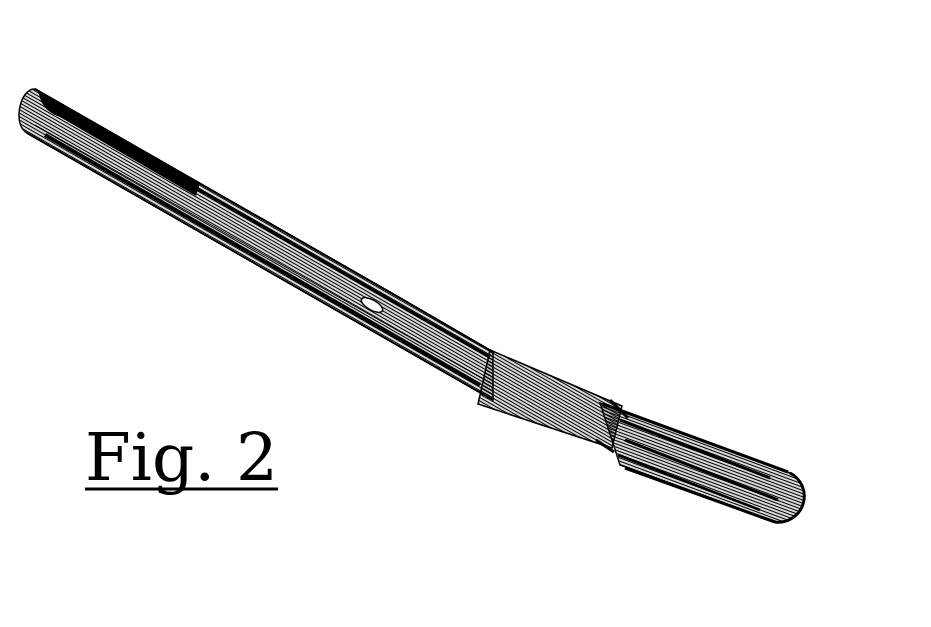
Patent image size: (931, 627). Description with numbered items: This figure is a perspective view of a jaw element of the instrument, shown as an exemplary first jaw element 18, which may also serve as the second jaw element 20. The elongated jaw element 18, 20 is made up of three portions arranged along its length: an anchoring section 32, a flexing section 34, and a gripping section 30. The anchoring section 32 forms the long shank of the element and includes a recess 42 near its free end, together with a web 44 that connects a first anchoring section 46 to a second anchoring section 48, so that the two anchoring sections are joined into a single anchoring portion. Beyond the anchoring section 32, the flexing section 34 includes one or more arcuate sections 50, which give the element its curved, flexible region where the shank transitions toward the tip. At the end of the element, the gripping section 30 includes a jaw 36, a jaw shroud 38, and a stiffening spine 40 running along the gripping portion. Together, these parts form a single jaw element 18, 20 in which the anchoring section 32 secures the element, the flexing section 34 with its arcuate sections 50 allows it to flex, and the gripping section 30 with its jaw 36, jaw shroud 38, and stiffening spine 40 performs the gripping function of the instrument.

The first jaw element 18 is at (537, 237).
The second jaw element 20 is at (256, 244).
The gripping section 30 is at (677, 512).
The anchoring section 32 is at (147, 127).
The flexing section 34 is at (587, 360).
The jaw 36 is at (732, 517).
The jaw shroud 38 is at (797, 520).
The stiffening spine 40 is at (698, 442).
The recess 42 is at (43, 97).
The web 44 is at (373, 300).
The first anchoring section 46 is at (302, 248).
The second anchoring section 48 is at (272, 258).
The arcuate sections 50 is at (620, 410).